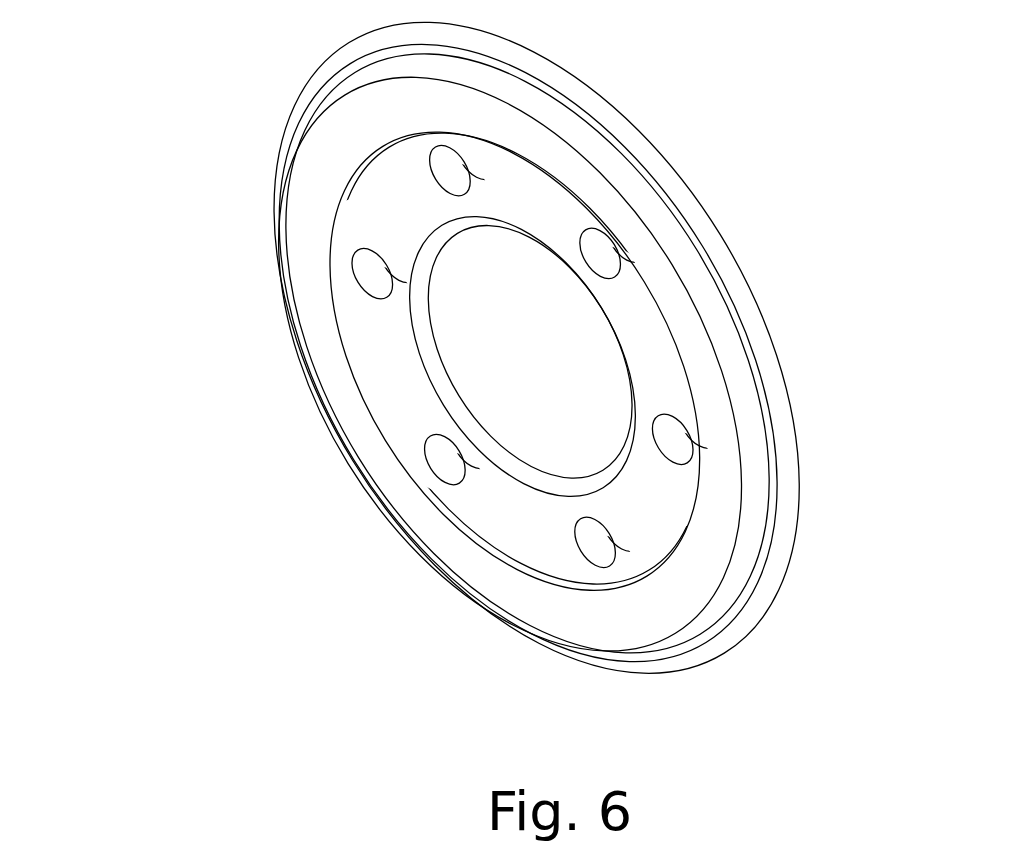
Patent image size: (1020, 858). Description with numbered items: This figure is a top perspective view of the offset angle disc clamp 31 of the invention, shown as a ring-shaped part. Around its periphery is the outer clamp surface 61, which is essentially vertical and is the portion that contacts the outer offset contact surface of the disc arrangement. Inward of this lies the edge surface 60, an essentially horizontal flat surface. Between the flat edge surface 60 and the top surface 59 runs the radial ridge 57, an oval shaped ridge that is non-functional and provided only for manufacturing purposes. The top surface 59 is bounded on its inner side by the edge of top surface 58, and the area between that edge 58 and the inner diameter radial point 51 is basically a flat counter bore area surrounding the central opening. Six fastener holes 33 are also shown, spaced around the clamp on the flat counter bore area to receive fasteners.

The offset angle disc clamp 31 is at (216, 145).
The fastener holes 33 is at (357, 282).
The inner diameter radial point 51 is at (603, 312).
The radial ridge 57 is at (752, 434).
The edge of top surface 58 is at (412, 482).
The top surface 59 is at (590, 122).
The edge surface 60 is at (744, 330).
The outer clamp surface 61 is at (787, 492).